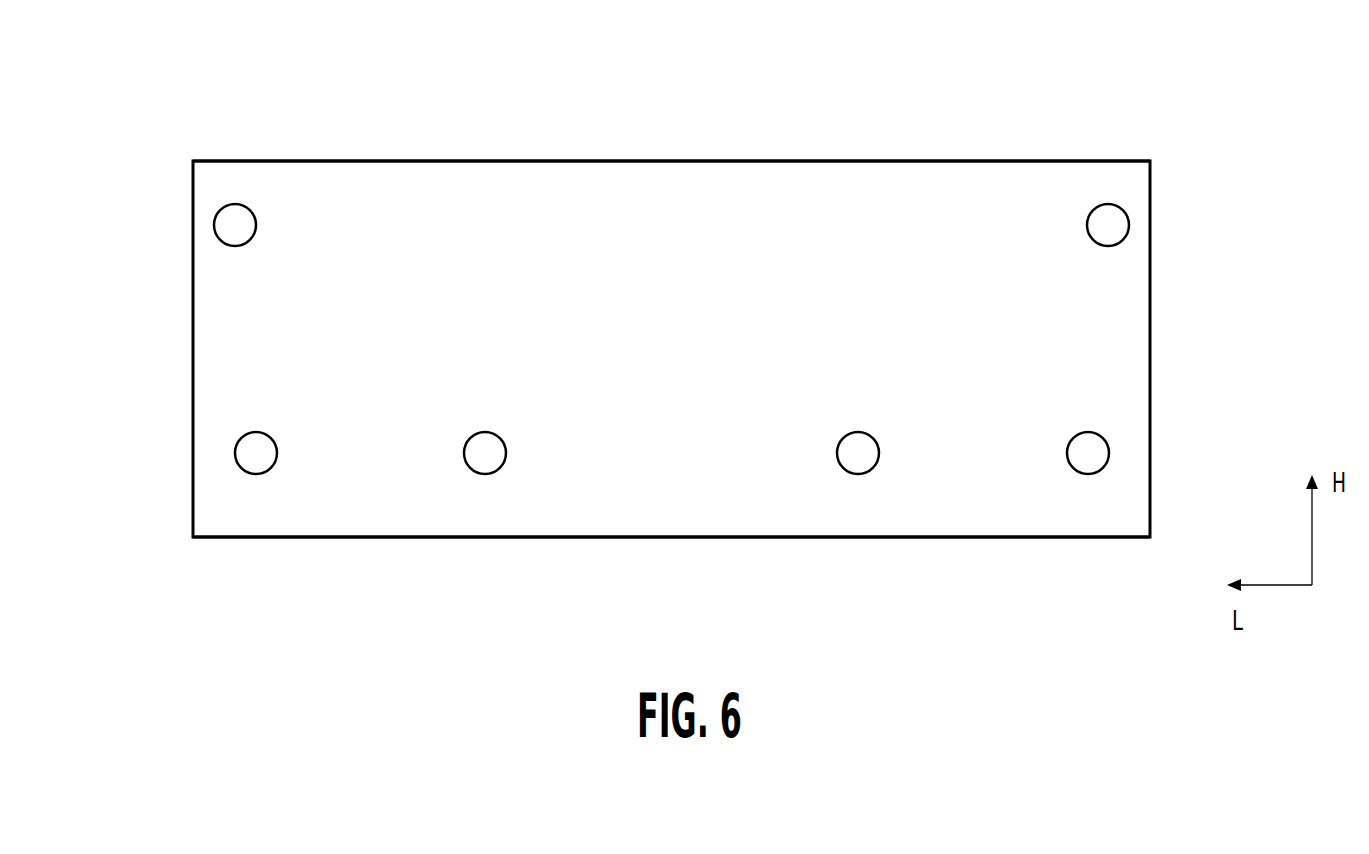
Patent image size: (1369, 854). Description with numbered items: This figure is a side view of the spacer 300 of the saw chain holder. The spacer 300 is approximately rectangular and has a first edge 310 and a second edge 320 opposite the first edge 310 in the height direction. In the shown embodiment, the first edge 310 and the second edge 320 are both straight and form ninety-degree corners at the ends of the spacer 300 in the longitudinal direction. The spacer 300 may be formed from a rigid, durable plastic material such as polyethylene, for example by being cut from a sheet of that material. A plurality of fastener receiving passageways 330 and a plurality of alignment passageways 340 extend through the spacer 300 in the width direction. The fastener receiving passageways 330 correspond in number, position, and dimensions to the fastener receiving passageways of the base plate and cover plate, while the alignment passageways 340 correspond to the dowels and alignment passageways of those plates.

The spacer 300 is at (277, 108).
The first edge 310 is at (970, 160).
The second edge 320 is at (330, 537).
The fastener receiving passageways 330 is at (232, 225).
The alignment passageways 340 is at (247, 457).